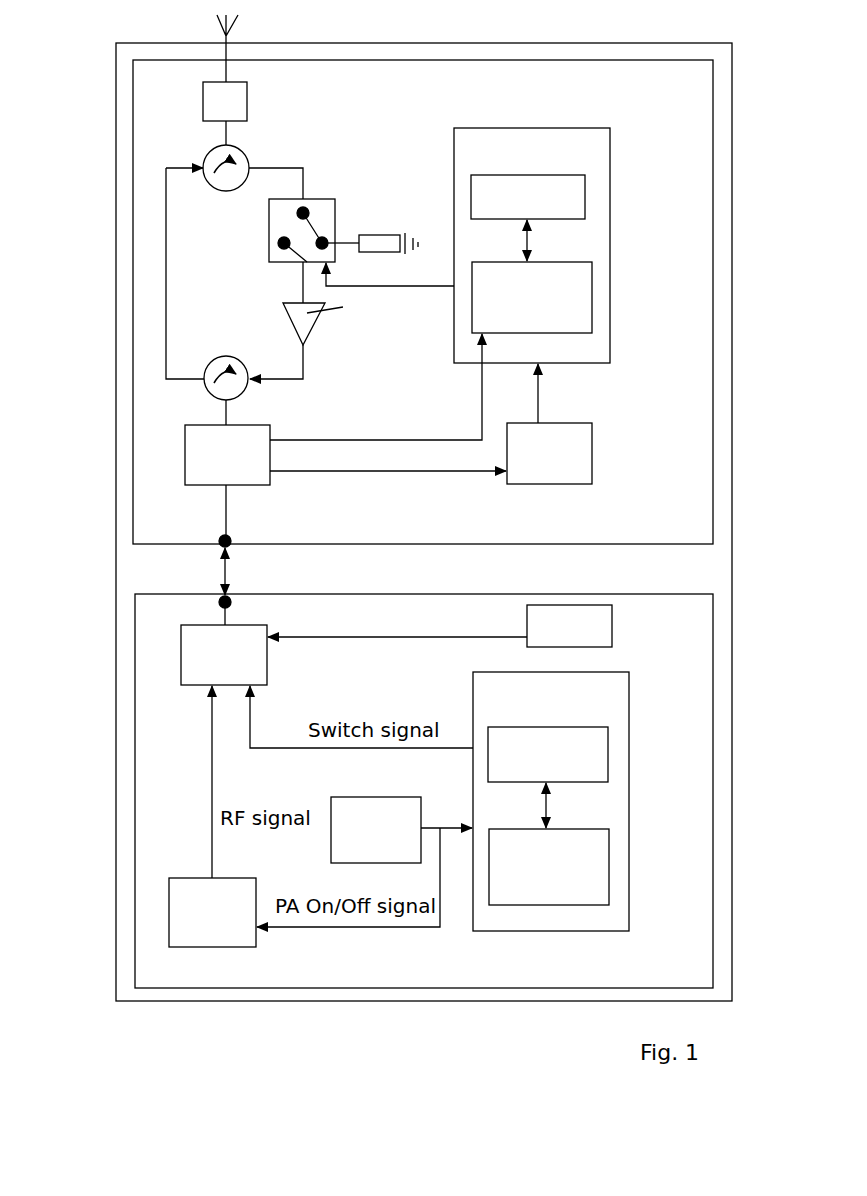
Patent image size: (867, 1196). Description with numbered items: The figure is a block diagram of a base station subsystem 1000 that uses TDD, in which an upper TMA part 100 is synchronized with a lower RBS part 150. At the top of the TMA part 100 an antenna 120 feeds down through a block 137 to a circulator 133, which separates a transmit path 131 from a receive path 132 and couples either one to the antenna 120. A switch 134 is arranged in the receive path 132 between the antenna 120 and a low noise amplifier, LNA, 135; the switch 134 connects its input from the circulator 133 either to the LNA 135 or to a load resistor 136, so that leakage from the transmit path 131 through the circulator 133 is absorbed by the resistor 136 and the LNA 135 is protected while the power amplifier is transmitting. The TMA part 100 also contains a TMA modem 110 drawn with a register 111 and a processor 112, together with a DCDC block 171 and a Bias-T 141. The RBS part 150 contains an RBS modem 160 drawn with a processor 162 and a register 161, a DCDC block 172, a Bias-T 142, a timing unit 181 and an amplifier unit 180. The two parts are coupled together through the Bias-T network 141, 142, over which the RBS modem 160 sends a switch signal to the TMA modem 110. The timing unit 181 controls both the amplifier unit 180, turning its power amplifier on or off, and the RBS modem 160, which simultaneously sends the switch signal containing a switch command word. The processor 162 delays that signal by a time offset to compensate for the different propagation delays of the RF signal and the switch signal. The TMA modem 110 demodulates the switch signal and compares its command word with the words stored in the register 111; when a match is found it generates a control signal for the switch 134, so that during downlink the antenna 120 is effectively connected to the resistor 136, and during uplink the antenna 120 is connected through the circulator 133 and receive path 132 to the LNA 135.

The base station subsystem 1000 is at (117, 352).
The TMA part 100 is at (712, 208).
The antenna 120 is at (237, 37).
The filter 137 is at (249, 111).
The circulator 133 is at (243, 150).
The receive path 132 is at (280, 170).
The switch 134 is at (320, 199).
The load resistor 136 is at (364, 234).
The low noise amplifier 135 is at (318, 327).
The transmit path 131 is at (166, 332).
The TMA modem 110 is at (488, 128).
The register 111 is at (587, 200).
The TMA processor 112 is at (592, 298).
The Bias-T network 141 is at (272, 435).
The TMA DC/DC converter 171 is at (573, 423).
The RBS part 150 is at (713, 670).
The Bias-T network 142 is at (267, 657).
The RBS DC/DC converter 172 is at (588, 605).
The RBS modem 160 is at (588, 931).
The processor 162 is at (608, 768).
The RBS register 161 is at (609, 865).
The timing unit 181 is at (375, 797).
The amplifier unit 180 is at (238, 878).